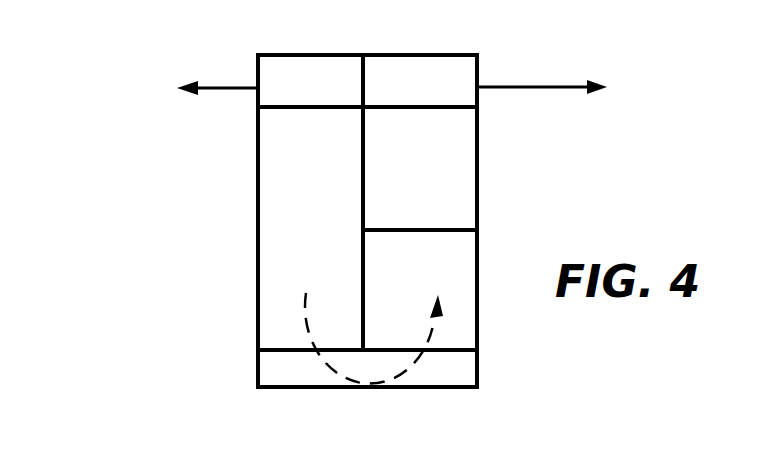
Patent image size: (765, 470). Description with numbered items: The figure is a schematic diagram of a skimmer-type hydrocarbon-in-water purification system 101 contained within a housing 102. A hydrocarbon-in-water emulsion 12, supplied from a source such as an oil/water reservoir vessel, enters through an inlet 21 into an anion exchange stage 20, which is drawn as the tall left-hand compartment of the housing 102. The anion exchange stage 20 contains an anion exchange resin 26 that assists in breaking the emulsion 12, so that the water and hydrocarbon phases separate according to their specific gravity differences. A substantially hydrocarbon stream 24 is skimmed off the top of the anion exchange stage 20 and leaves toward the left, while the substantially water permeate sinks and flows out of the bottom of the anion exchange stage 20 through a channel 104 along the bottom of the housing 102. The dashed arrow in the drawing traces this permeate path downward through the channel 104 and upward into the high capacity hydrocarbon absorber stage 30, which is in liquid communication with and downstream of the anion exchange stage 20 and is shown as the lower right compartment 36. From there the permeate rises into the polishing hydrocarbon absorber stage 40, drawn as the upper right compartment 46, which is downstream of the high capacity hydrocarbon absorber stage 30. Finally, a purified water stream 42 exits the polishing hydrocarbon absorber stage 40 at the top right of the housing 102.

The hydrocarbon-in-water emulsion 12 is at (242, 228).
The anion exchange stage 20 is at (272, 146).
The inlet 21 is at (195, 228).
The substantially hydrocarbon stream 24 is at (195, 91).
The anion exchange resin 26 is at (332, 228).
The high capacity hydrocarbon absorber stage 30 is at (466, 329).
The second chamber 36 is at (438, 279).
The polishing hydrocarbon absorber stage 40 is at (466, 132).
The purified water stream 42 is at (571, 86).
The third chamber 46 is at (440, 185).
The hydrocarbon-in-water purification system 101 is at (220, 428).
The housing 102 is at (363, 55).
The channel 104 is at (425, 377).